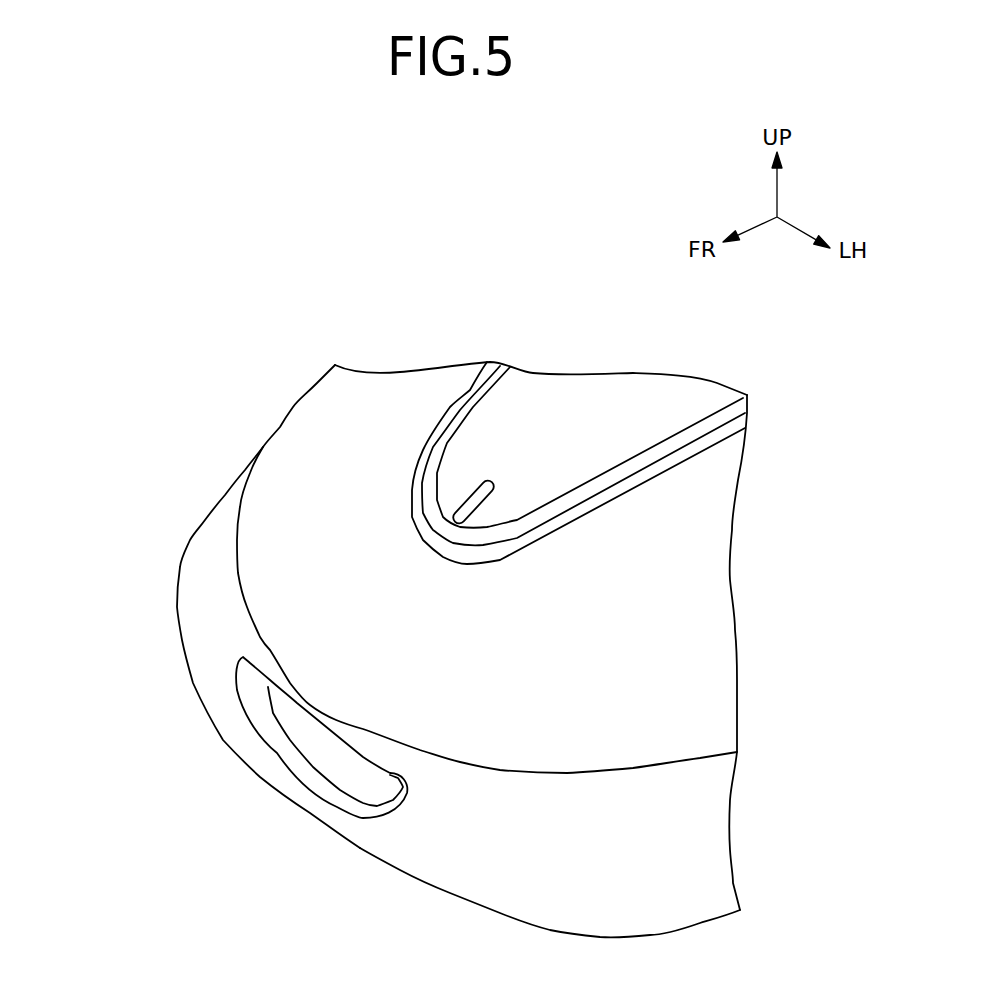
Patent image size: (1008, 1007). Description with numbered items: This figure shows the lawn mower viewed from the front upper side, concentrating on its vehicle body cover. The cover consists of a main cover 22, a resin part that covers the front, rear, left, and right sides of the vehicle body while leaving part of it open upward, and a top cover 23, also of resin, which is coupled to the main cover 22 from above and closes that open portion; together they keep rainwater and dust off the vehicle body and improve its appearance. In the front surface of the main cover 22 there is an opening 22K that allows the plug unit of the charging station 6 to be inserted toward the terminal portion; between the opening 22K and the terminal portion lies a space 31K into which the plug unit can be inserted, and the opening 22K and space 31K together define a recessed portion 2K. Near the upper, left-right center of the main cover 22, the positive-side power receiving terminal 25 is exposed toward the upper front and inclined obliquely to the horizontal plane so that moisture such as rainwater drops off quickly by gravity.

The charging station 6 is at (261, 307).
The main cover 22 is at (195, 530).
The top cover 23 is at (273, 440).
The positive-side power receiving terminal 25 is at (463, 505).
The recessed portion 2K is at (229, 722).
The space 31K is at (295, 722).
The opening 22K is at (297, 748).